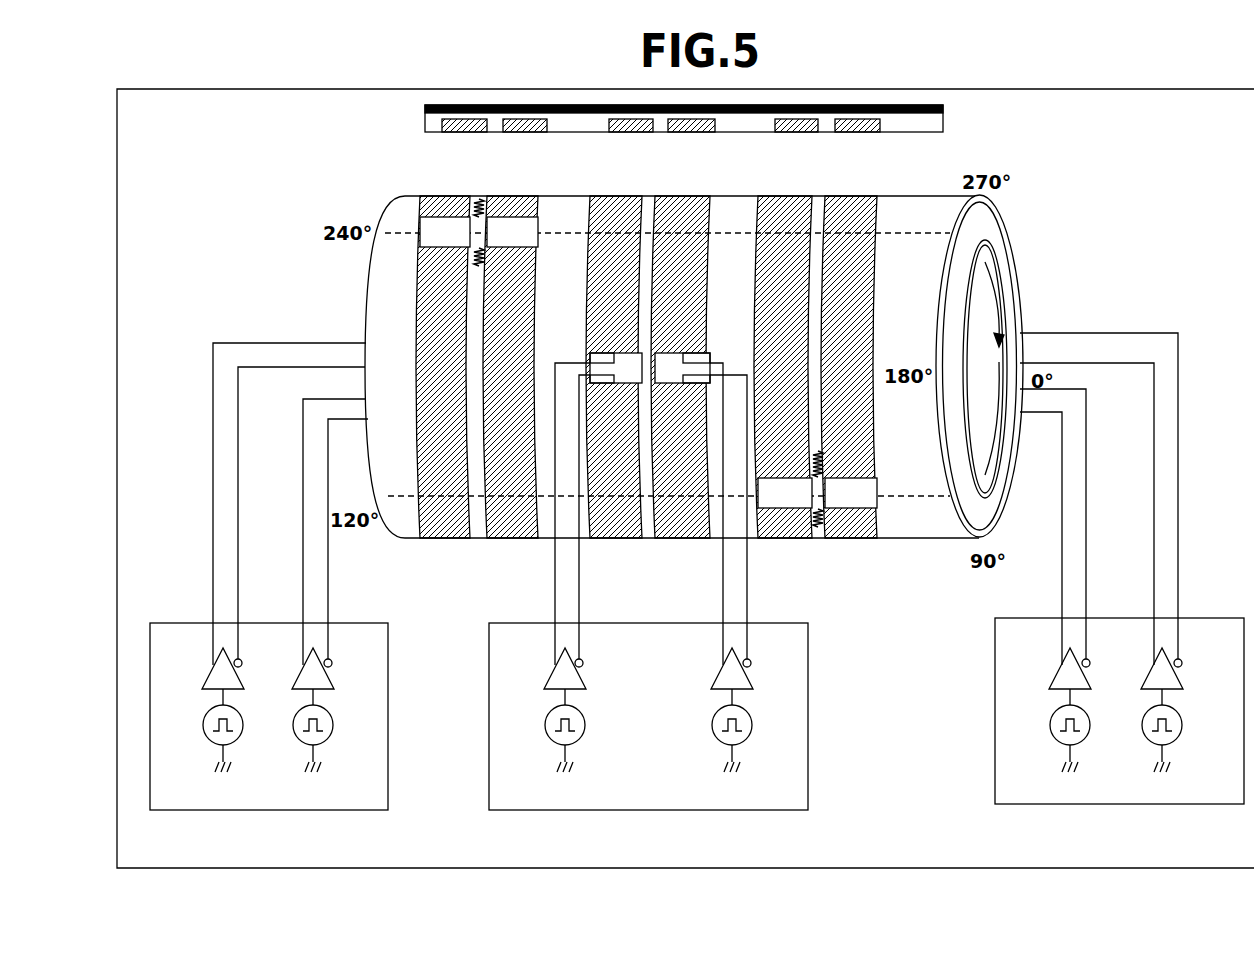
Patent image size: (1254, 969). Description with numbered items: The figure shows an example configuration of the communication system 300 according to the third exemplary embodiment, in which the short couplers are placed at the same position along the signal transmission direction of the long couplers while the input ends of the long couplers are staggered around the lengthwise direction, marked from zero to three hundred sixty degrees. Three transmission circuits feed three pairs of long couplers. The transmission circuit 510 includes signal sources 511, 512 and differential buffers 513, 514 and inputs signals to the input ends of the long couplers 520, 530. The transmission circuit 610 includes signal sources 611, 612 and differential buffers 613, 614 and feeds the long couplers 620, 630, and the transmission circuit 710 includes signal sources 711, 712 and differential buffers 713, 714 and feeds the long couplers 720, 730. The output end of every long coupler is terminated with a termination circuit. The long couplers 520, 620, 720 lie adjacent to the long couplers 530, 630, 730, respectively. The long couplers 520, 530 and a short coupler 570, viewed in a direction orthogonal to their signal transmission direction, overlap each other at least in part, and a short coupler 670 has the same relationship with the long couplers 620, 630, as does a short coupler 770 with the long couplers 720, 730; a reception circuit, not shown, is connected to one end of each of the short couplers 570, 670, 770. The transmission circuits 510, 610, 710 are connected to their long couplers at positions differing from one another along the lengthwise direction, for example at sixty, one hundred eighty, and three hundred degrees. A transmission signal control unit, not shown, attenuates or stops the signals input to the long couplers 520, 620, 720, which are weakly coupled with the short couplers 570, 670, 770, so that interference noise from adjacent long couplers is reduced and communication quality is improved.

The communication system 300 is at (1068, 89).
The transmission circuit 510 is at (269, 603).
The signal source 511 is at (208, 742).
The signal source 512 is at (328, 742).
The differential buffer 513 is at (211, 672).
The differential buffer 514 is at (326, 674).
The long coupler 520 is at (477, 356).
The long coupler 530 is at (441, 196).
The short coupler 570 is at (477, 133).
The transmission circuit 610 is at (648, 613).
The signal source 611 is at (550, 742).
The signal source 612 is at (747, 742).
The differential buffer 613 is at (553, 672).
The differential buffer 614 is at (745, 674).
The long coupler 620 is at (648, 356).
The long coupler 630 is at (611, 196).
The short coupler 670 is at (646, 133).
The transmission circuit 710 is at (1119, 596).
The signal source 711 is at (1055, 742).
The signal source 712 is at (1177, 742).
The differential buffer 713 is at (1058, 672).
The differential buffer 714 is at (1175, 674).
The long coupler 720 is at (815, 356).
The long coupler 730 is at (776, 196).
The short coupler 770 is at (810, 133).